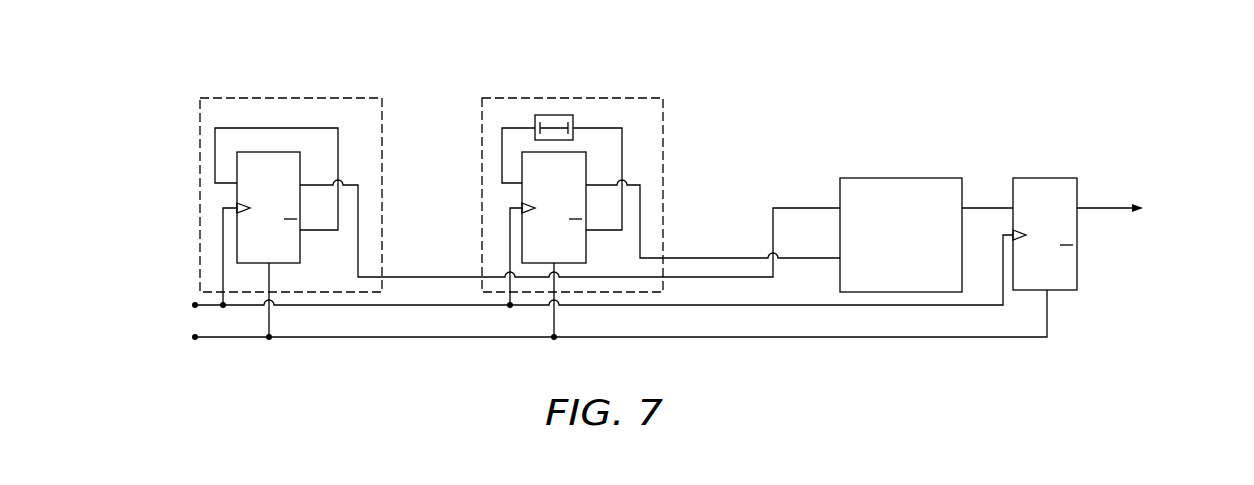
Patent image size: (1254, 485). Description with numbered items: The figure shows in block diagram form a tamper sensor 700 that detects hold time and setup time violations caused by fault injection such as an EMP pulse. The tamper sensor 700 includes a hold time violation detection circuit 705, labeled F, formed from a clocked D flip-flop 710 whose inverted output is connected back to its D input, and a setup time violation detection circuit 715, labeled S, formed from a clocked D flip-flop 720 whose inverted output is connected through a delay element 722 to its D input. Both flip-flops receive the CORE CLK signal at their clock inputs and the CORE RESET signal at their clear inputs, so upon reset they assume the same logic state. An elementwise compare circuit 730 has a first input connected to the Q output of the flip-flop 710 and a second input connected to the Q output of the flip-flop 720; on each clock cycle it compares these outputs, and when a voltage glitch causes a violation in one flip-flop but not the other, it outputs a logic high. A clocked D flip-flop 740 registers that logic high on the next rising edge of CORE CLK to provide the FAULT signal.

The tamper sensor 700 is at (118, 99).
The hold time violation detection circuit 705 is at (343, 98).
The clocked D flip-flop 710 is at (280, 157).
The setup time violation detection circuit 715 is at (642, 98).
The clocked D flip-flop 720 is at (587, 160).
The delay element 722 is at (577, 124).
The elementwise compare circuit 730 is at (900, 178).
The clocked D flip-flop 740 is at (1025, 178).